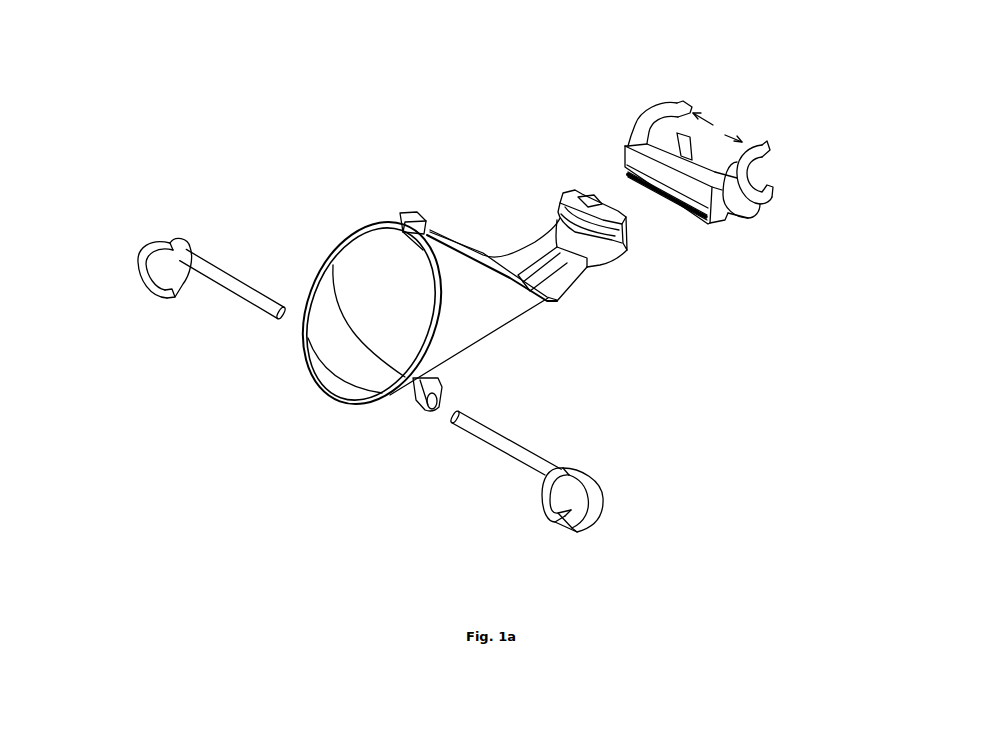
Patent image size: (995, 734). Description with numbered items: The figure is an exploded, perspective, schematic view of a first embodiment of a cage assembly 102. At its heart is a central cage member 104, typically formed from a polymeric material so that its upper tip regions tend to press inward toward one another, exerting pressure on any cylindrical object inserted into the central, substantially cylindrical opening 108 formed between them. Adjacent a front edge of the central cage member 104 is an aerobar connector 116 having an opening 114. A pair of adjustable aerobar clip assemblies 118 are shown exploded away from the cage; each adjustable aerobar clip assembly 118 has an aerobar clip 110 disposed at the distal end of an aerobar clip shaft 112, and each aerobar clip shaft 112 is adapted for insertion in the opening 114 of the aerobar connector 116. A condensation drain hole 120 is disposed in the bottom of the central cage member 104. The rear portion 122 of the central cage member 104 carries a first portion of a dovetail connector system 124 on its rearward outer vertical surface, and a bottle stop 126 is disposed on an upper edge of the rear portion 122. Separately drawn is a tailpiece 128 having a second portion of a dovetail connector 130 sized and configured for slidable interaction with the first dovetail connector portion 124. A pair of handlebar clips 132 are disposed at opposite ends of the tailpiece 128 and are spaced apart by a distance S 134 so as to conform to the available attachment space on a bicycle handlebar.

The cage assembly 102 is at (255, 92).
The central cage member 104 is at (493, 320).
The central, substantially cylindrical opening 108 is at (338, 345).
The aerobar clip 110 is at (142, 281).
The aerobar clip shaft 112 is at (225, 297).
The opening 114 is at (432, 414).
The aerobar connector 116 is at (397, 213).
The adjustable aerobar clip assembly 118 is at (243, 267).
The condensation drain hole 120 is at (600, 250).
The rear portion 122 is at (573, 178).
The first portion of dovetail connector system 124 is at (630, 242).
The bottle stop 126 is at (587, 203).
The tailpiece 128 is at (747, 111).
The second portion of dovetail connector 130 is at (710, 223).
The handlebar clip 132 is at (760, 143).
The distance S 134 is at (717, 120).